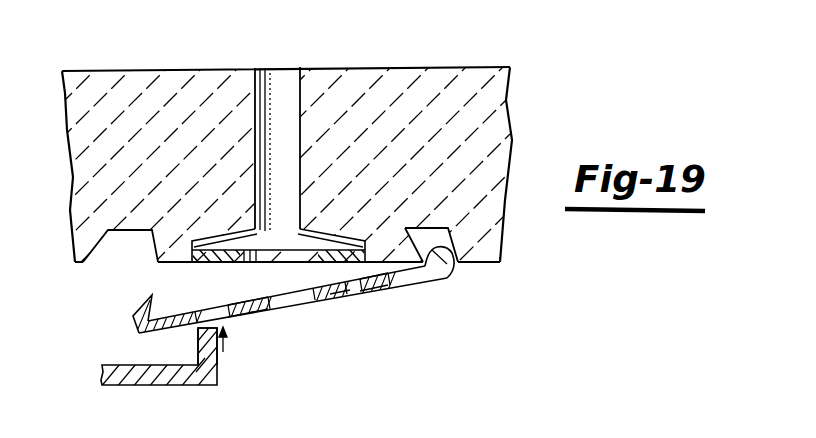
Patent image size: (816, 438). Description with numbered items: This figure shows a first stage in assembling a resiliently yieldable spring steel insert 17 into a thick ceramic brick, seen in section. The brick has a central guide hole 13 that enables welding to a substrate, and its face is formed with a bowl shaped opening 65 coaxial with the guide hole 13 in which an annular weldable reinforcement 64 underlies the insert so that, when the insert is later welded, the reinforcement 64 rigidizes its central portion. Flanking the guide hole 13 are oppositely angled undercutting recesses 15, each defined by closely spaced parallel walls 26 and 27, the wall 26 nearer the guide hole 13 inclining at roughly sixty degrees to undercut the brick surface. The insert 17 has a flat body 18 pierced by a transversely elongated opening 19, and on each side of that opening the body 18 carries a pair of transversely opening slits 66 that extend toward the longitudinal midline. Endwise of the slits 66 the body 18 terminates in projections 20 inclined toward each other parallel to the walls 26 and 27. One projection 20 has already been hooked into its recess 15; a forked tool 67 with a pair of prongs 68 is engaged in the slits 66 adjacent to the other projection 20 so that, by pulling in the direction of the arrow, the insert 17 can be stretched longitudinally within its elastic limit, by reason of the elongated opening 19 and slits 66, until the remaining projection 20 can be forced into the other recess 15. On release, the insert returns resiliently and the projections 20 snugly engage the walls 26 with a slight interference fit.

The guide hole 13 is at (256, 93).
The recess 15 is at (448, 248).
The insert 17 is at (426, 284).
The flat body 18 is at (342, 296).
The elongated opening 19 is at (257, 312).
The projection 20 is at (140, 297).
The recess wall proximate to the guide hole 26 is at (138, 248).
The recess wall remote from the guide hole 27 is at (100, 252).
The annular weldable reinforcement 64 is at (222, 264).
The bowl shaped opening 65 is at (293, 252).
The slit 66 is at (236, 316).
The forked tool 67 is at (187, 385).
The prong 68 is at (198, 344).